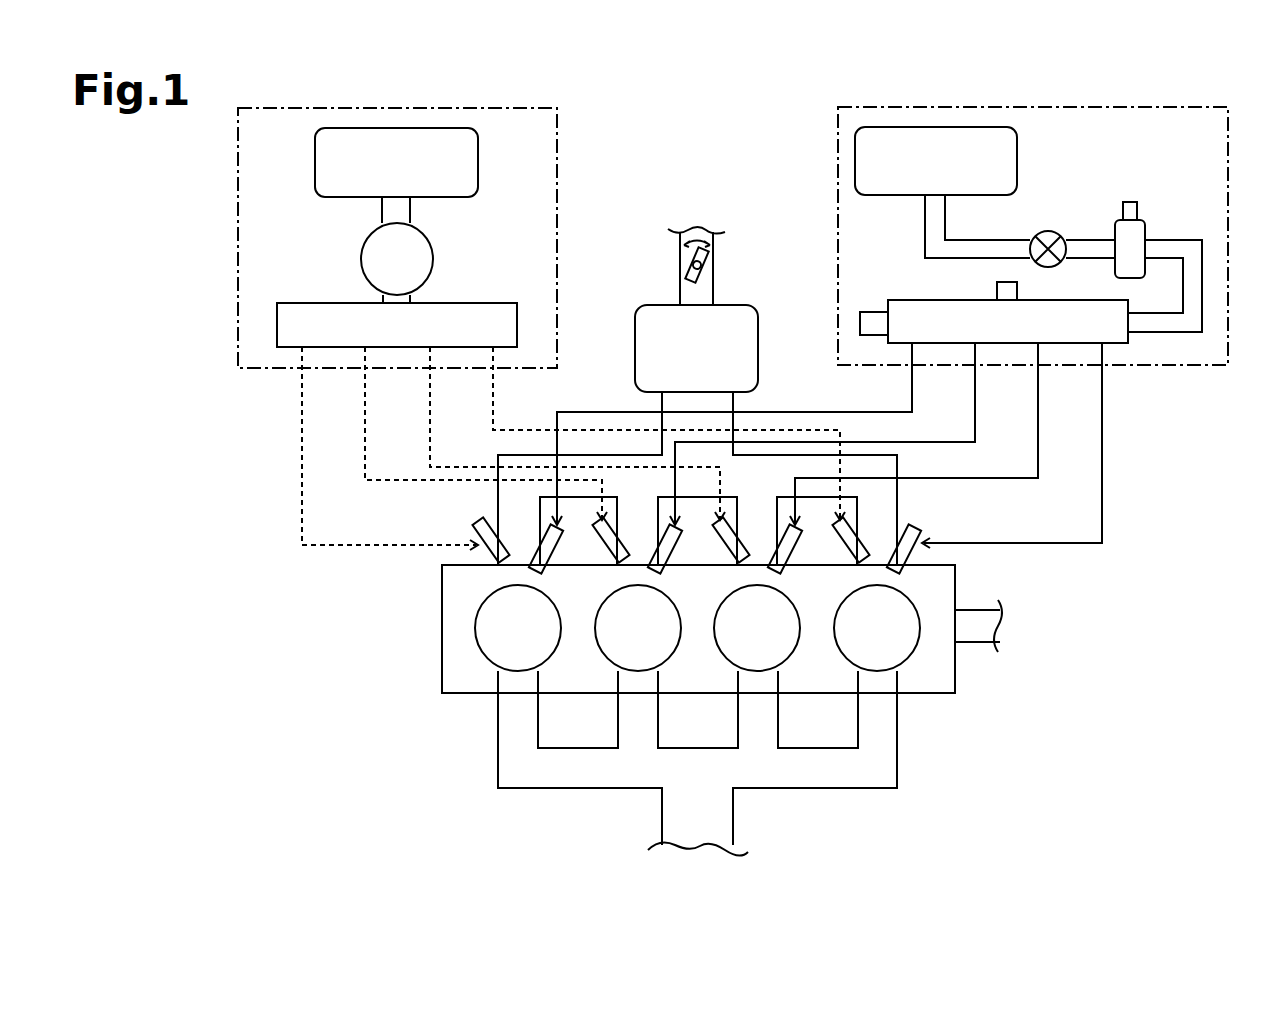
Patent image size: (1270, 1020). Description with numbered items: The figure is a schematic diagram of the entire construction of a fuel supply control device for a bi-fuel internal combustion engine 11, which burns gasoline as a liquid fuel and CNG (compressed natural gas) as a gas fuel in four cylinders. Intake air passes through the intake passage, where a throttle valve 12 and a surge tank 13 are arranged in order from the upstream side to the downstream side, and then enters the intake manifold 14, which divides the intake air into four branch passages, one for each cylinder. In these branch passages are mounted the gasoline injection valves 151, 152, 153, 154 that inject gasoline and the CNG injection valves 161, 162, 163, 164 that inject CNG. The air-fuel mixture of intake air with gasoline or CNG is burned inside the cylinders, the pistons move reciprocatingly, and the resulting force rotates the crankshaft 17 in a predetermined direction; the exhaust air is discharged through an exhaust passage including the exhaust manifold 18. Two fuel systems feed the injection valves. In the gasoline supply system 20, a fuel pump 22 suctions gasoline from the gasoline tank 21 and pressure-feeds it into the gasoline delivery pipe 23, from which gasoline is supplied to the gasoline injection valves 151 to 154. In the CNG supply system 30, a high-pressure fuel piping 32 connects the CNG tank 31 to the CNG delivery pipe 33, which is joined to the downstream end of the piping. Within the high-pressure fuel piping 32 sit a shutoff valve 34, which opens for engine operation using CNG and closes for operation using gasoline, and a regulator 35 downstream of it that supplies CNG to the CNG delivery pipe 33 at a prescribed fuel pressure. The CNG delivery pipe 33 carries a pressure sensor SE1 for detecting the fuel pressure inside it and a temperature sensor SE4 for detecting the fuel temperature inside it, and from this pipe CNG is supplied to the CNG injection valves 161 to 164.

The bi-fuel internal combustion engine 11 is at (400, 752).
The throttle valve 12 is at (712, 266).
The surge tank 13 is at (758, 345).
The intake manifold 14 is at (660, 404).
The crankshaft 17 is at (983, 658).
The exhaust manifold 18 is at (897, 758).
The gasoline supply system 20 is at (270, 108).
The gasoline tank 21 is at (478, 160).
The fuel pump 22 is at (433, 256).
The gasoline delivery pipe 23 is at (517, 325).
The CNG supply system 30 is at (868, 107).
The CNG tank 31 is at (1017, 150).
The high-pressure fuel piping 32 is at (925, 232).
The CNG delivery pipe 33 is at (925, 300).
The shutoff valve 34 is at (1046, 231).
The regulator 35 is at (1142, 218).
The pressure sensor SE1 is at (870, 310).
The temperature sensor SE4 is at (1018, 290).
The gasoline injection valve 151 is at (482, 527).
The gasoline injection valve 152 is at (607, 550).
The gasoline injection valve 153 is at (727, 548).
The gasoline injection valve 154 is at (847, 548).
The CNG injection valve 161 is at (558, 562).
The CNG injection valve 162 is at (678, 562).
The CNG injection valve 163 is at (798, 562).
The CNG injection valve 164 is at (917, 562).